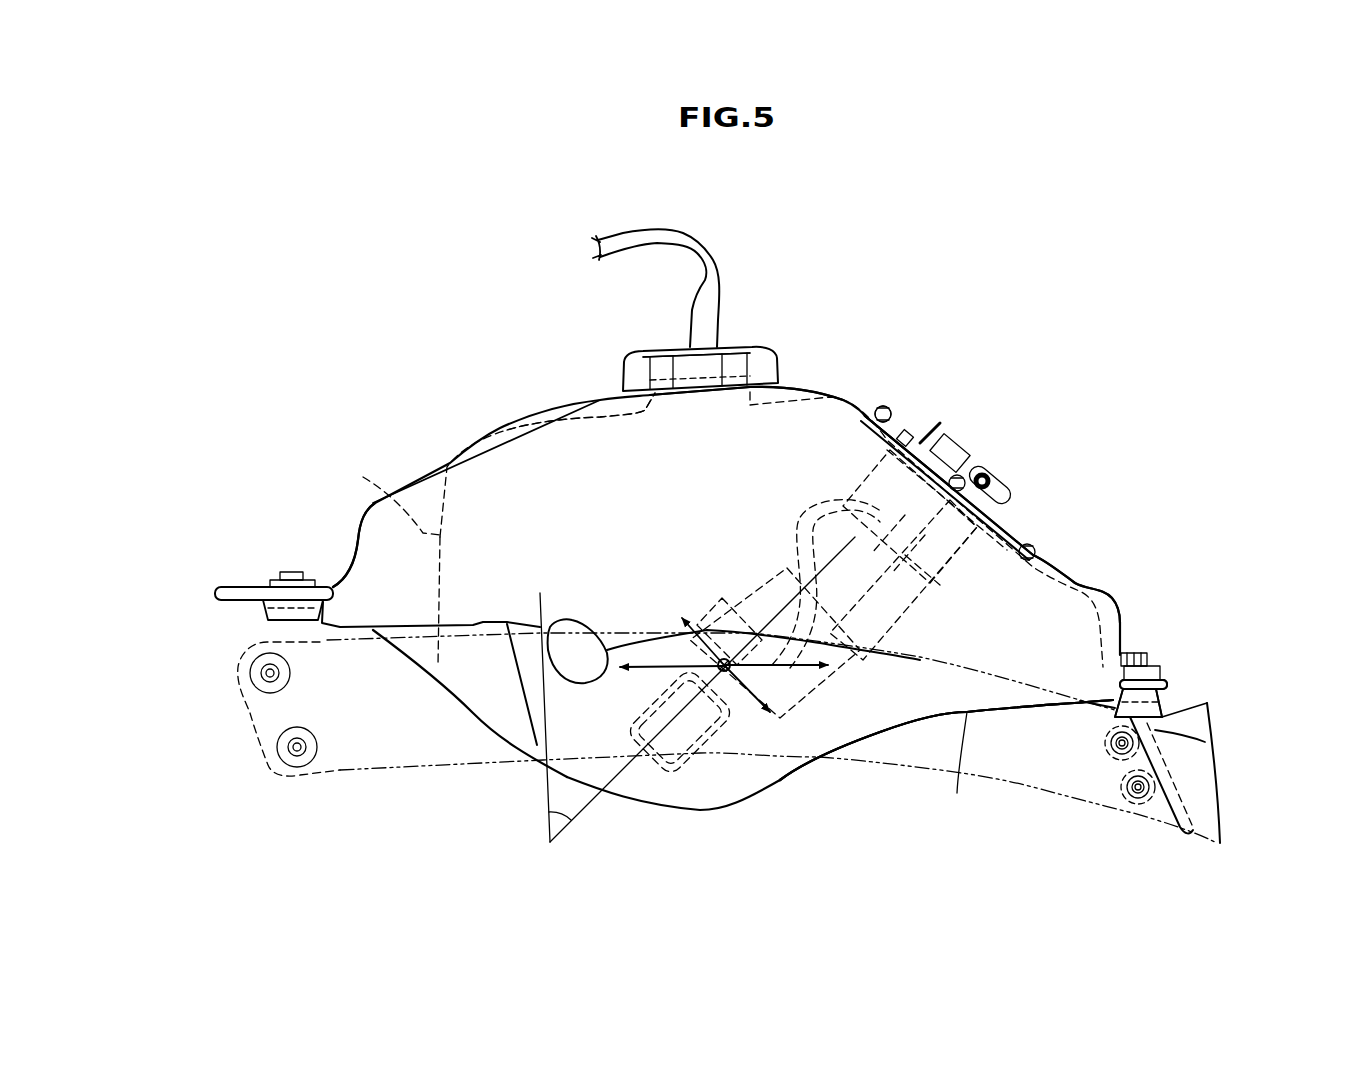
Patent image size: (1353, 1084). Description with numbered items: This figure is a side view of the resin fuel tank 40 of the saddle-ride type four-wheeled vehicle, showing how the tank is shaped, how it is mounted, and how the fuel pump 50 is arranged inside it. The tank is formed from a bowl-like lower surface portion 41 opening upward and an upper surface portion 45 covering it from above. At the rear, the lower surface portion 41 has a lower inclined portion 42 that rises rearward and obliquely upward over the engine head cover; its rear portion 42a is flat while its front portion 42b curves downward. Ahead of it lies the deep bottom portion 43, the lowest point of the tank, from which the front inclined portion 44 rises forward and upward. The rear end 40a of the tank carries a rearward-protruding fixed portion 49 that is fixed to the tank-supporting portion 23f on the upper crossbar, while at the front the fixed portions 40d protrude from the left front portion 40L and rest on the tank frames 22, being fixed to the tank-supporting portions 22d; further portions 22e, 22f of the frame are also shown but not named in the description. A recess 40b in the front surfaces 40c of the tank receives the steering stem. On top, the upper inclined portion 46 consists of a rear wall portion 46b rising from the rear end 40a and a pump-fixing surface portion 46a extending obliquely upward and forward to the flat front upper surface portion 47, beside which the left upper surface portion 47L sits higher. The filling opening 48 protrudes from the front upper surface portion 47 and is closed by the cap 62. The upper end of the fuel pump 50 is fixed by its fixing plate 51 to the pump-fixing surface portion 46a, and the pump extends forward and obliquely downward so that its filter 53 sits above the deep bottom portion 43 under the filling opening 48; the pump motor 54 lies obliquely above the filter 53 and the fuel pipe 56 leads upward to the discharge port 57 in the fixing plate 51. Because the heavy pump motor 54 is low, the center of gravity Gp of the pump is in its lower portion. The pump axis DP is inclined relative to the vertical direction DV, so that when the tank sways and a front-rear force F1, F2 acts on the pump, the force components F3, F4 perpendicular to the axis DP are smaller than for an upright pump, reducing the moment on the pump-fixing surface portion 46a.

The fuel tank 40 is at (899, 310).
The rear end 40a is at (1133, 657).
The recess 40b is at (363, 477).
The front surfaces 40c is at (353, 557).
The fixed portions 40d is at (258, 577).
The left front portion 40L is at (423, 487).
The lower surface portion 41 is at (757, 822).
The lower inclined portion 42 is at (995, 828).
The rear portion 42a is at (1027, 768).
The front portion 42b is at (813, 757).
The deep bottom portion 43 is at (725, 810).
The front inclined portion 44 is at (477, 713).
The upper surface portion 45 is at (812, 375).
The upper inclined portion 46 is at (1007, 363).
The pump-fixing surface portion 46a is at (903, 425).
The rear wall portion 46b is at (1120, 623).
The front upper surface portion 47 is at (565, 415).
The left upper surface portion 47L is at (595, 425).
The filling opening 48 is at (708, 370).
The fixed portion 49 is at (1167, 675).
The fuel pump 50 is at (740, 573).
The fixing plate 51 is at (935, 440).
The filter 53 is at (662, 778).
The pump motor 54 is at (730, 605).
The fuel pipe 56 is at (853, 497).
The discharge port 57 is at (990, 470).
The cap 62 is at (738, 348).
The tank frames 22 is at (512, 768).
The tank-supporting portions 22d is at (265, 632).
The front frame bracket lower portion 22e is at (245, 722).
The rear frame bracket 22f is at (1172, 780).
The tank-supporting portion 23f is at (1160, 703).
The force in the front-rear direction F1 is at (797, 675).
The force in the front-rear direction F2 is at (630, 672).
The force perpendicular to the pump extending direction F3 is at (770, 702).
The force perpendicular to the pump extending direction F4 is at (690, 622).
The center of gravity Gp is at (724, 672).
The vertical direction line DV is at (543, 680).
The axis direction line DP is at (595, 805).